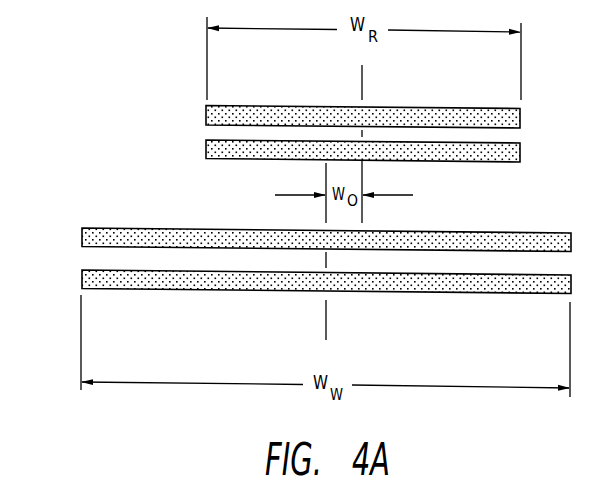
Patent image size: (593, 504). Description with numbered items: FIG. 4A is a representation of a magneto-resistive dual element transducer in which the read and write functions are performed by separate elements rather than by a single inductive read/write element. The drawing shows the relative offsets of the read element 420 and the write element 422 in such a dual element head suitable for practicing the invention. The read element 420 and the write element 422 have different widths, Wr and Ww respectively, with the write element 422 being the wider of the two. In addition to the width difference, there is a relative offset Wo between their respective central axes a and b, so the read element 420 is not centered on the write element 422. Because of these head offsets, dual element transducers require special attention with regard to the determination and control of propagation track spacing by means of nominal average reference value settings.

The read element 420 is at (194, 106).
The write element 422 is at (72, 228).
The central axis of the read element a is at (326, 335).
The central axis of the write element b is at (362, 74).